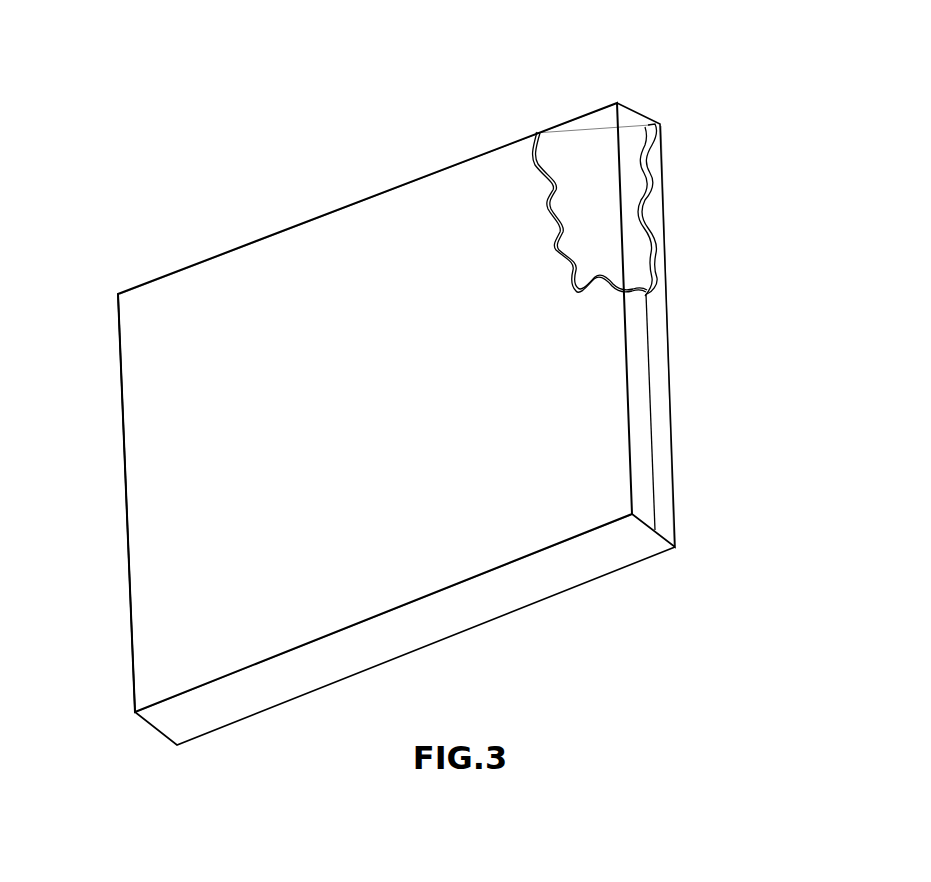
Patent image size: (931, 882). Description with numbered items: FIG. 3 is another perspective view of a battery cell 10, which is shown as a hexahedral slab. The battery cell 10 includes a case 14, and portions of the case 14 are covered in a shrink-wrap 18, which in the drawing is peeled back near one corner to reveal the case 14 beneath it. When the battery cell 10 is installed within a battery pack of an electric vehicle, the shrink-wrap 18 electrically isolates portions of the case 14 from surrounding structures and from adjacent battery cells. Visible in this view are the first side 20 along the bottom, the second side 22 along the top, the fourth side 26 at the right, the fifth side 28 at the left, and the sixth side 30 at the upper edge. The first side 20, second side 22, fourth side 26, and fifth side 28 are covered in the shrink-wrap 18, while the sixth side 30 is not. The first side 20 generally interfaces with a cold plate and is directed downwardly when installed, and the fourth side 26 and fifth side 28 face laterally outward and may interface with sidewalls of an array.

The battery cell 10 is at (732, 90).
The case 14 is at (595, 134).
The shrink-wrap 18 is at (605, 330).
The first side 20 is at (393, 652).
The second side 22 is at (372, 235).
The fourth side 26 is at (724, 374).
The fifth side 28 is at (101, 528).
The sixth side 30 is at (582, 74).